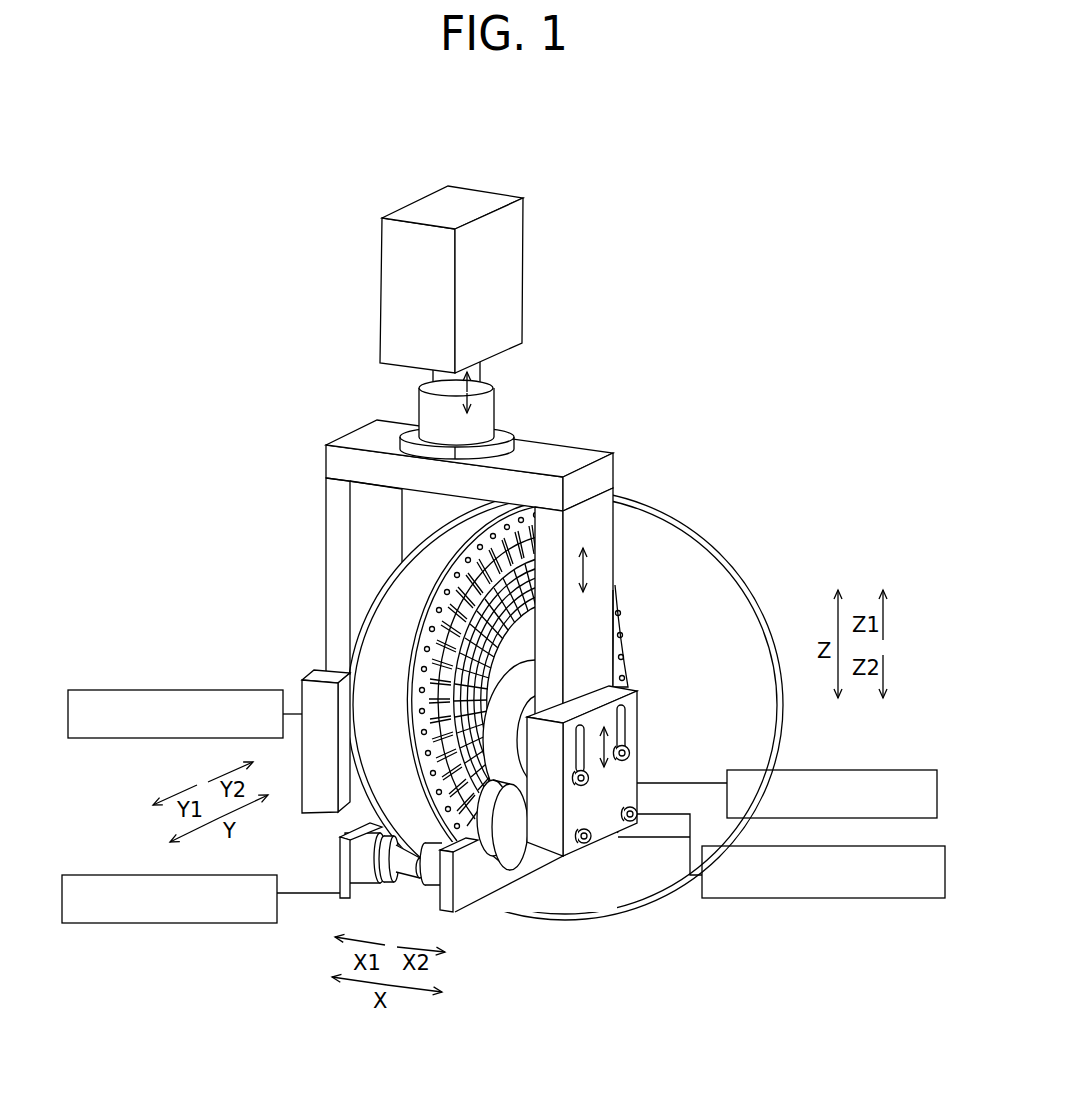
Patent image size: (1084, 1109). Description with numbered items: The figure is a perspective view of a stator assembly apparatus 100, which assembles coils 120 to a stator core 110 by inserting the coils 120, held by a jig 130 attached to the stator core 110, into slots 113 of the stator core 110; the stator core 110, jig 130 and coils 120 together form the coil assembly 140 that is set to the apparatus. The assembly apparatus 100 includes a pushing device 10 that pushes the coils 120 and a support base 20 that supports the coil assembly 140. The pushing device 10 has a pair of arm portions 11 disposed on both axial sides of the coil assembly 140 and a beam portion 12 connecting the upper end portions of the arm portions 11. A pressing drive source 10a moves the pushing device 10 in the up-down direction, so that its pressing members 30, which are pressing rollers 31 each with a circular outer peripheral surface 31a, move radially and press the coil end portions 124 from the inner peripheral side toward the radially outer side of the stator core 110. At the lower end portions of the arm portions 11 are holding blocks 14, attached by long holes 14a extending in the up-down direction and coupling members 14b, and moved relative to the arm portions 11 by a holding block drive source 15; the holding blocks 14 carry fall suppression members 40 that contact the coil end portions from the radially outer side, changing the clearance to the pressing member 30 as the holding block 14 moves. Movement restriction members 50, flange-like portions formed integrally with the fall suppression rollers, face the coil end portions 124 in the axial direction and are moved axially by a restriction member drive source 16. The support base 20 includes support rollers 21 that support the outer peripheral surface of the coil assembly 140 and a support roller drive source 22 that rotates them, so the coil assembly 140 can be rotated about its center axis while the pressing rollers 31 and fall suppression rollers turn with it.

The pressing drive source 10a is at (490, 285).
The beam portion 12 is at (543, 457).
The pushing device 10 is at (457, 547).
The jig 130 is at (520, 550).
The assembly apparatus 100 is at (503, 584).
The coil assembly 140 is at (423, 543).
The coils 120 is at (334, 647).
The coil end portion 124 is at (460, 613).
The arm portions 11 is at (322, 592).
The holding block drive source 15 is at (96, 690).
The holding blocks 14 is at (484, 754).
The slots 113 is at (711, 635).
The stator core 110 is at (613, 627).
The outer peripheral surface 31a is at (521, 668).
The pressing members 30 is at (633, 714).
The pressing rollers 31 is at (633, 714).
The long holes 14a is at (624, 726).
The coupling members 14b is at (631, 752).
The support roller drive source 22 is at (90, 875).
The support rollers 21 is at (372, 890).
The support base 20 is at (473, 888).
The movement restriction members 50 is at (584, 862).
The fall suppression members 40 is at (537, 865).
The restriction member drive source 16 is at (885, 898).